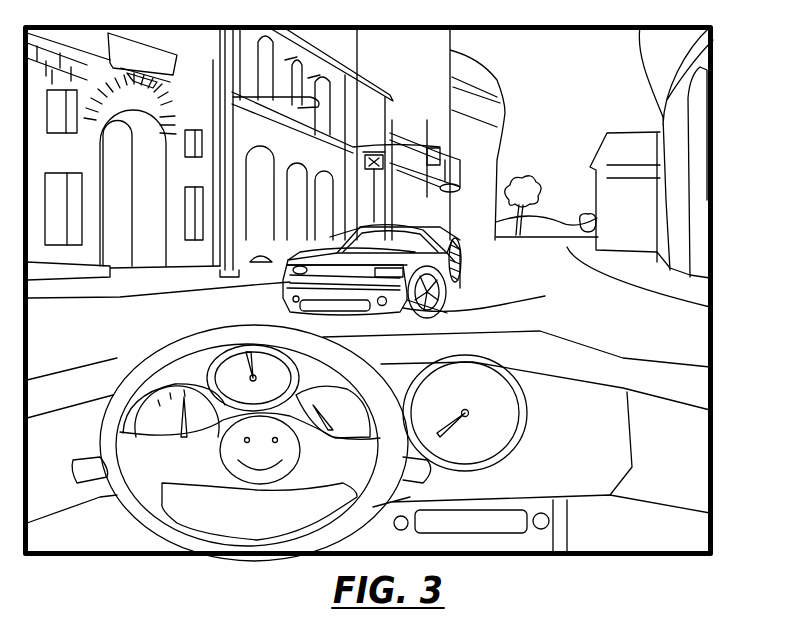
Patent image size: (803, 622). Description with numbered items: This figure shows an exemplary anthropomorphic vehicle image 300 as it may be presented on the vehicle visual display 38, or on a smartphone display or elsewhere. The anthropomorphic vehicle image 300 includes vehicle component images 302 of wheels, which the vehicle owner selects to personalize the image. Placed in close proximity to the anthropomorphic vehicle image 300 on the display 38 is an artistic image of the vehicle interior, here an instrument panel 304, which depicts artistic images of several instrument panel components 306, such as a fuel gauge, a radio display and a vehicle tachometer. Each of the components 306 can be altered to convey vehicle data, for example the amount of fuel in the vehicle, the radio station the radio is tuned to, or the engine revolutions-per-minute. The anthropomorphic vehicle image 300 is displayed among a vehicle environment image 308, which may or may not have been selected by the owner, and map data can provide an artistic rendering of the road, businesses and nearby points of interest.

The vehicle visual display 38 is at (713, 296).
The anthropomorphic vehicle image 300 is at (457, 238).
The vehicle component images 302 is at (460, 275).
The instrument panel 304 is at (676, 444).
The instrument panel components 306 is at (147, 408).
The vehicle environment image 308 is at (628, 96).